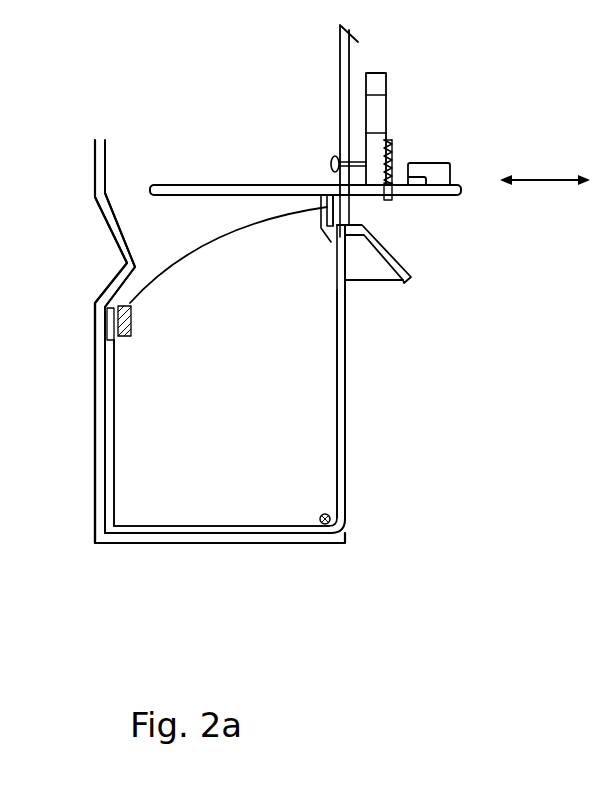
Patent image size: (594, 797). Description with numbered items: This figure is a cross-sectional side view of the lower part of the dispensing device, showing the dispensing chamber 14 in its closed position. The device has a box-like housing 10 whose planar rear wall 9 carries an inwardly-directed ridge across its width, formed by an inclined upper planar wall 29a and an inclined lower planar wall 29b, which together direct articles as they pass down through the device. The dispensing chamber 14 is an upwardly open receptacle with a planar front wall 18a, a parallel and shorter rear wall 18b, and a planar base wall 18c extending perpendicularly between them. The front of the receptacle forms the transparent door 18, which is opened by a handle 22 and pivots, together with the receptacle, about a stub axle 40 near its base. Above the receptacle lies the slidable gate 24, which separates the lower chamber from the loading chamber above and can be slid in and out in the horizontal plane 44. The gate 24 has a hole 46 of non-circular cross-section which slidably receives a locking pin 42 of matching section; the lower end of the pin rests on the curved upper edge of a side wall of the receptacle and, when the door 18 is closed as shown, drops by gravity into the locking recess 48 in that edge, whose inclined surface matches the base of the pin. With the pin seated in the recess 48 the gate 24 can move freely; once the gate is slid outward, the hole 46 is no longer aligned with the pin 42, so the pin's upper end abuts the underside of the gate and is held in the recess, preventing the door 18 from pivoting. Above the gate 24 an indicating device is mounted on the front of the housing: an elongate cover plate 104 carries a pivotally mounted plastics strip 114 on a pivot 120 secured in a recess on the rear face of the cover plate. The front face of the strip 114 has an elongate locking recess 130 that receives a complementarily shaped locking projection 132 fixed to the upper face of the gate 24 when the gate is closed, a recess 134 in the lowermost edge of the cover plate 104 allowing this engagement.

The rear wall 9 is at (100, 445).
The housing 10 is at (90, 556).
The dispensing chamber 14 is at (239, 492).
The door 18 is at (362, 431).
The front wall 18a is at (349, 301).
The rear wall 18b is at (117, 460).
The base wall 18c is at (172, 523).
The handle 22 is at (398, 262).
The gate 24 is at (265, 184).
The upper planar wall 29a is at (108, 238).
The lower planar wall 29b is at (114, 278).
The stub axle 40 is at (323, 522).
The locking pin 42 is at (320, 203).
The horizontal plane 44 is at (568, 178).
The hole 46 is at (388, 197).
The locking recess 48 is at (325, 236).
The cover plate 104 is at (391, 165).
The plastics strip 114 is at (362, 138).
The pivot 120 is at (331, 164).
The locking recess 130 is at (372, 112).
The locking projection 132 is at (452, 163).
The recess 134 is at (430, 162).